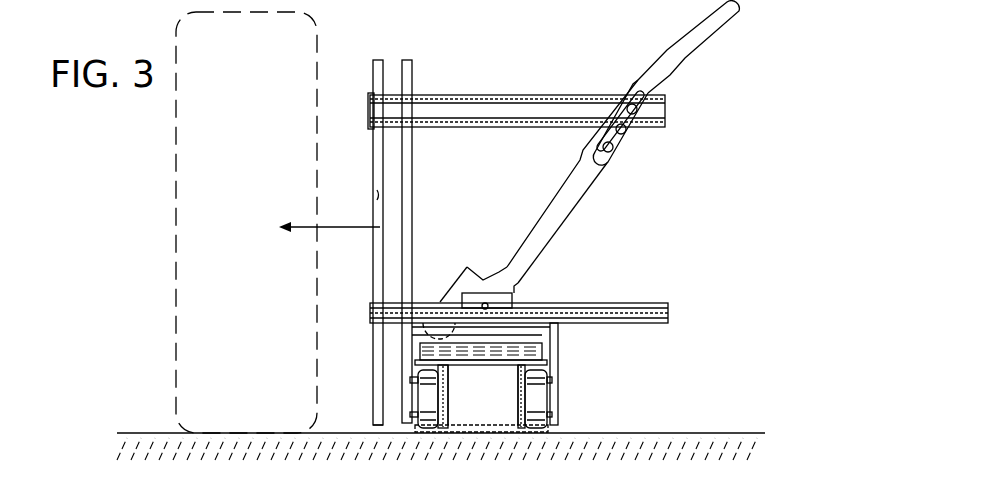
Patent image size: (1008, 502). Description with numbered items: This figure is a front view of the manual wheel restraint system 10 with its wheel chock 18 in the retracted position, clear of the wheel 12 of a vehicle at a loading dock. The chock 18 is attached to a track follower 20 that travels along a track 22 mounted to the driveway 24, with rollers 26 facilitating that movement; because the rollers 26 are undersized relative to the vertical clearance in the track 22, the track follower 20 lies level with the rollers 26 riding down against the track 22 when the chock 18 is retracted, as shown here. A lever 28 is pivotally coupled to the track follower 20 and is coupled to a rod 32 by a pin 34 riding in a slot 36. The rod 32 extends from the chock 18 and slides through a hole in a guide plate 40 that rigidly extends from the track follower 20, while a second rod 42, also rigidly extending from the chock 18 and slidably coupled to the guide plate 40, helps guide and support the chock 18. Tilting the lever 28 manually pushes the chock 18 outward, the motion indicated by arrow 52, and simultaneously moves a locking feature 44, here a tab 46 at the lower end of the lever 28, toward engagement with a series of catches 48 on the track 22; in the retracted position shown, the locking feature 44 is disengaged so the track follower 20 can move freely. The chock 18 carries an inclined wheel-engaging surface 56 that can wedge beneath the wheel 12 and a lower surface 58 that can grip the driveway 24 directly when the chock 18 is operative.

The wheel restraint system 10 is at (601, 46).
The wheel 12 is at (178, 167).
The wheel chock 18 is at (373, 172).
The track follower 20 is at (529, 327).
The track 22 is at (447, 407).
The driveway 24 is at (668, 432).
The rollers 26 is at (537, 394).
The lever 28 is at (700, 50).
The rod 32 is at (463, 93).
The pin 34 is at (626, 136).
The slot 36 is at (611, 148).
The guide plate 40 is at (413, 159).
The second rod 42 is at (633, 302).
The locking feature 44 is at (451, 250).
The tab 46 is at (440, 302).
The catches 48 is at (467, 362).
The arrow 52 is at (342, 229).
The inclined wheel-engaging surface 56 is at (373, 198).
The lower surface 58 is at (379, 426).